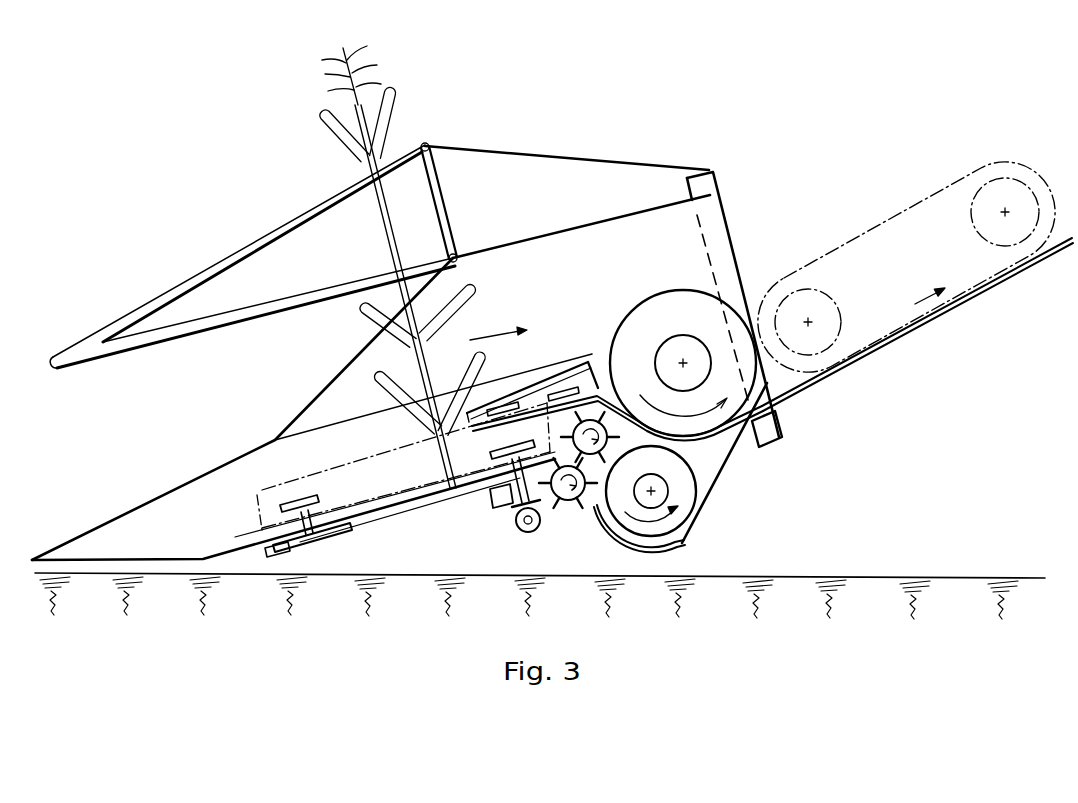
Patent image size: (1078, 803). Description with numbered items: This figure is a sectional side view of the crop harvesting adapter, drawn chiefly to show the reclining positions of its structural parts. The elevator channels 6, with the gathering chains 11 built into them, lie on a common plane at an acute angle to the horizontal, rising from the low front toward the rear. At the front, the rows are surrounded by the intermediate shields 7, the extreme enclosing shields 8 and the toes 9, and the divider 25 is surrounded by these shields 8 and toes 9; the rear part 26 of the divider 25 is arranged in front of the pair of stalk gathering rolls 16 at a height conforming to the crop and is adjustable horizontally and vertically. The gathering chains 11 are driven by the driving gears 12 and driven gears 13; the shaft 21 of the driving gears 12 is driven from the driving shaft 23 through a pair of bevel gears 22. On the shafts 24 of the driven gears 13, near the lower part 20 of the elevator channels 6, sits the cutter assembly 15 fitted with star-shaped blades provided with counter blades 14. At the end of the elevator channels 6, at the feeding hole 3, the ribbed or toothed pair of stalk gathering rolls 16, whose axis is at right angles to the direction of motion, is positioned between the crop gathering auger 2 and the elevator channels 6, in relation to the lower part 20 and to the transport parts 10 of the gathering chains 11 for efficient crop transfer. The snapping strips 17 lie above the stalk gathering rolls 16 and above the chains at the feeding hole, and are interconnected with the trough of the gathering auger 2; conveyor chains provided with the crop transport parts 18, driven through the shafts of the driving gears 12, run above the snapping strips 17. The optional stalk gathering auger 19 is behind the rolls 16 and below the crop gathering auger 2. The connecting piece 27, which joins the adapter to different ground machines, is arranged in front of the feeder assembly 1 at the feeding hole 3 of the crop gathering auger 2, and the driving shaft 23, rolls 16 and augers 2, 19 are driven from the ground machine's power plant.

The feeder assembly 1 is at (893, 318).
The crop gathering auger 2 is at (723, 418).
The feeding hole 3 is at (763, 388).
The elevator channels 6 is at (428, 488).
The intermediate shields 7 is at (375, 432).
The extreme enclosing shields 8 is at (373, 363).
The toes 9 is at (130, 540).
The transport parts 10 is at (363, 465).
The gathering chains 11 is at (343, 490).
The driving gears 12 is at (489, 450).
The driven gears 13 is at (277, 503).
The counter blades 14 is at (330, 537).
The cutter assembly 15 is at (280, 550).
The pair of stalk gathering rolls 16 is at (588, 478).
The snapping strips 17 is at (539, 398).
The crop transport parts 18 is at (479, 408).
The stalk gathering auger 19 is at (697, 512).
The lower part 20 is at (413, 502).
The shaft 21 is at (507, 473).
The pair of bevel gears 22 is at (513, 518).
The driving shaft 23 is at (540, 520).
The shafts 24 is at (270, 530).
The divider 25 is at (165, 335).
The rear part 26 is at (457, 242).
The connecting piece 27 is at (718, 225).